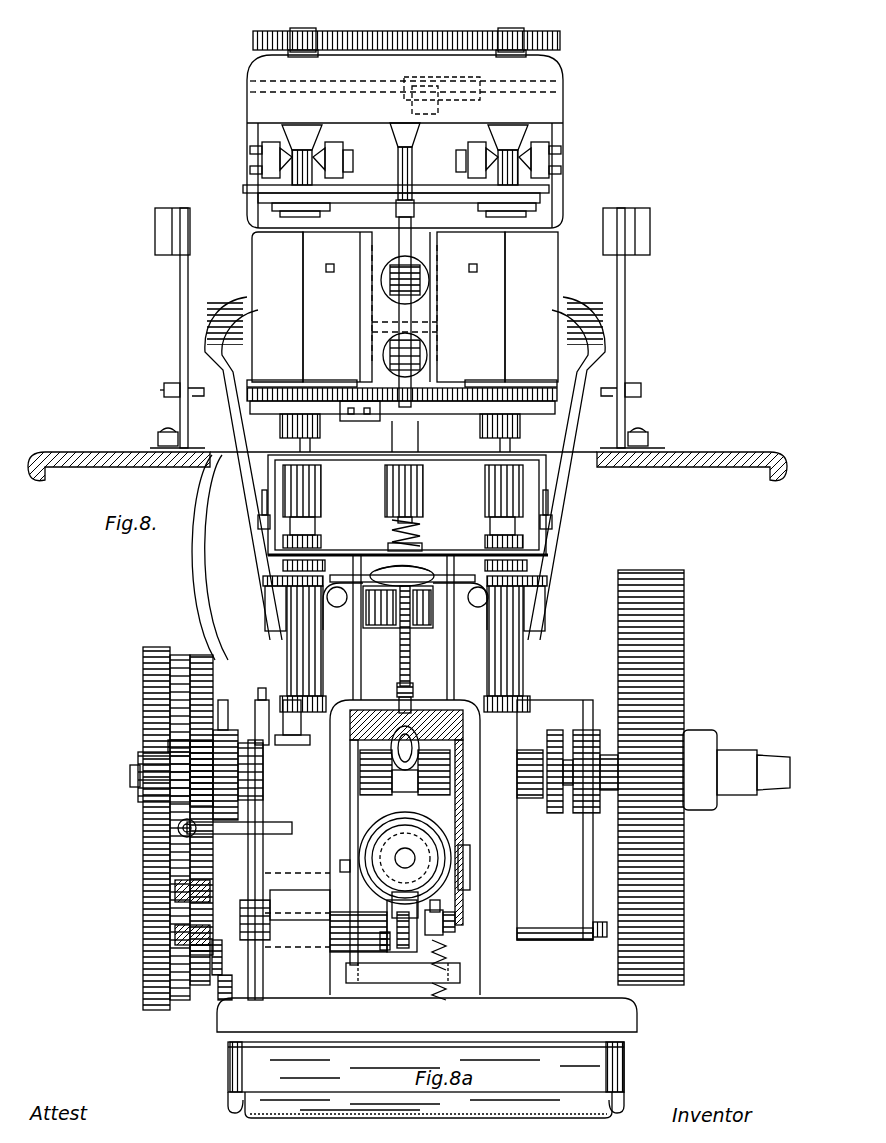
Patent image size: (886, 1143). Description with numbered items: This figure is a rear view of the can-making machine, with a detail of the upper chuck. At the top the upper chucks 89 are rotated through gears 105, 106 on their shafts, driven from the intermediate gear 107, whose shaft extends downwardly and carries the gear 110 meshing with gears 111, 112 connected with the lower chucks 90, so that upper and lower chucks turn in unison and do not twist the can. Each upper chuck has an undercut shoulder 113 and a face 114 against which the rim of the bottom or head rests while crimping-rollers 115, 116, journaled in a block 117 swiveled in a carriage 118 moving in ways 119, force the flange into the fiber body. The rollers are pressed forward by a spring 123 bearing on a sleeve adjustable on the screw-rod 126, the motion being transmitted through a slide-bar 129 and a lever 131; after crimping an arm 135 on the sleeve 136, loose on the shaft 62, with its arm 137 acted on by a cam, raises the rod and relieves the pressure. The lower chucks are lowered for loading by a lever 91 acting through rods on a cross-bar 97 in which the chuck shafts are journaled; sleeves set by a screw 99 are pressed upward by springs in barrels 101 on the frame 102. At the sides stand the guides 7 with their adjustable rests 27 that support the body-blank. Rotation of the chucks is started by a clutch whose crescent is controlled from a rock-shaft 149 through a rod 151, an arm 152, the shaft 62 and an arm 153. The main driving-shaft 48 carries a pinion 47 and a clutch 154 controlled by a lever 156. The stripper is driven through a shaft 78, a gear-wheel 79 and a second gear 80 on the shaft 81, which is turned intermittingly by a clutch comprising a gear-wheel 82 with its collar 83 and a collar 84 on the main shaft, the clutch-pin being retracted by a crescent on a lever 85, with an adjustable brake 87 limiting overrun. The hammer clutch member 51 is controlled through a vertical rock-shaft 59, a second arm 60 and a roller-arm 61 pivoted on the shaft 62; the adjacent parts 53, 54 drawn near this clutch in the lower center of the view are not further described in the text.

In FIG. 8, the guides 7 is at (180, 296).
In FIG. 8, the rests 27 is at (205, 406).
In FIG. 8, the pinion 47 is at (155, 790).
In FIG. 8, the main driving-shaft 48 is at (135, 778).
In FIG. 8, the clutch member 51 is at (420, 600).
In FIG. 8, the cross head 53 is at (462, 740).
In FIG. 8, the guide frame 54 is at (430, 708).
In FIG. 8, the vertical rock-shaft 59 is at (268, 632).
In FIG. 8, the second arm 60 is at (180, 838).
In FIG. 8, the roller-arm 61 is at (175, 875).
In FIG. 8, the shaft 62 is at (460, 940).
In FIG. 8, the shaft 78 is at (416, 858).
In FIG. 8, the gear-wheel 79 is at (418, 838).
In FIG. 8, the second gear 80 is at (350, 840).
In FIG. 8, the shaft 81 is at (268, 868).
In FIG. 8, the gear-wheel 82 is at (240, 735).
In FIG. 8, the collar 83 is at (255, 768).
In FIG. 8, the collar 84 is at (190, 748).
In FIG. 8, the lever 85 is at (258, 700).
In FIG. 8, the adjustable brake 87 is at (268, 738).
In FIG. 8, the upper chucks 89 is at (245, 188).
In FIG. 8A, the upper chucks 89 is at (625, 1068).
In FIG. 8, the lower chucks 90 is at (288, 385).
In FIG. 8, the lever 91 is at (396, 688).
In FIG. 8, the cross-bar 97 is at (292, 422).
In FIG. 8, the screw 99 is at (236, 547).
In FIG. 8, the barrels 101 is at (270, 600).
In FIG. 8, the frame 102 is at (462, 565).
In FIG. 8, the gear 105 is at (262, 40).
In FIG. 8, the gear 106 is at (560, 42).
In FIG. 8, the intermediate gear 107 is at (460, 26).
In FIG. 8, the gear 110 is at (445, 388).
In FIG. 8, the gear 111 is at (520, 385).
In FIG. 8, the gear 112 is at (335, 385).
In FIG. 8, the undercut shoulder 113 is at (230, 1092).
In FIG. 8A, the undercut shoulder 113 is at (426, 1077).
In FIG. 8A, the face 114 is at (250, 1103).
In FIG. 8, the crimping-roller 115 is at (284, 232).
In FIG. 8, the crimping-roller 116 is at (328, 228).
In FIG. 8, the block 117 is at (282, 212).
In FIG. 8, the carriage 118 is at (280, 165).
In FIG. 8, the ways 119 is at (330, 160).
In FIG. 8, the spring 123 is at (395, 522).
In FIG. 8, the screw-rod 126 is at (400, 652).
In FIG. 8, the slide-bar 129 is at (390, 230).
In FIG. 8, the lever 131 is at (396, 208).
In FIG. 8, the arm 135 is at (403, 960).
In FIG. 8, the sleeve 136 is at (395, 950).
In FIG. 8, the arm 137 is at (178, 985).
In FIG. 8, the rock-shaft 149 is at (565, 87).
In FIG. 8, the rod 151 is at (437, 328).
In FIG. 8, the arm 152 is at (445, 928).
In FIG. 8, the arm 153 is at (178, 900).
In FIG. 8, the clutch 154 is at (555, 800).
In FIG. 8, the lever 156 is at (590, 880).